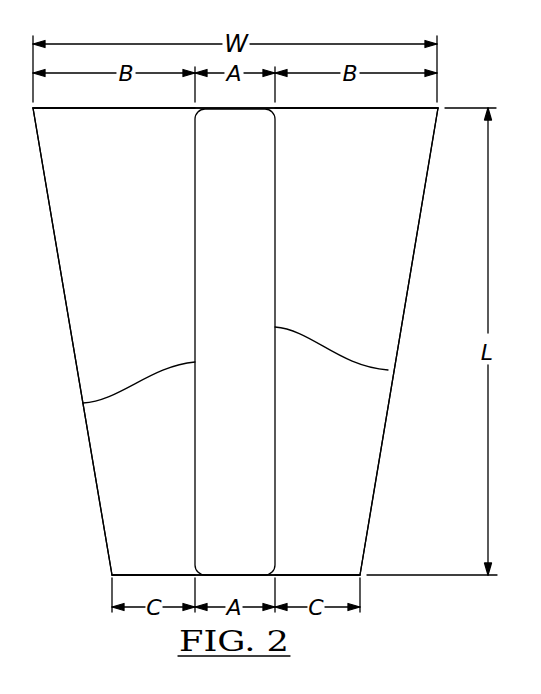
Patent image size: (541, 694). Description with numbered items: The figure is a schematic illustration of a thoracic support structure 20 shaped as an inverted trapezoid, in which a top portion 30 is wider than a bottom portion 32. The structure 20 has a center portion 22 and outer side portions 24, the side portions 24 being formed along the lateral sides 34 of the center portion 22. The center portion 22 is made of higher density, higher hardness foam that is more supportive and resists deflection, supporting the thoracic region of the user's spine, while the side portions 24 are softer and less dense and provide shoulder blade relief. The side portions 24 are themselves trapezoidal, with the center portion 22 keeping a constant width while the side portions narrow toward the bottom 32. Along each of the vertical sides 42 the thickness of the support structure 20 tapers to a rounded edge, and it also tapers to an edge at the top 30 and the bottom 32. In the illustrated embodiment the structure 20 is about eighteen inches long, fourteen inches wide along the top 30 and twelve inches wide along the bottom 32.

The thoracic support structure 20 is at (398, 515).
The center portion 22 is at (225, 259).
The outer side portions 24 is at (104, 300).
The top portion 30 is at (130, 107).
The bottom portion 32 is at (175, 575).
The lateral sides 34 is at (85, 403).
The vertical sides 42 is at (69, 339).